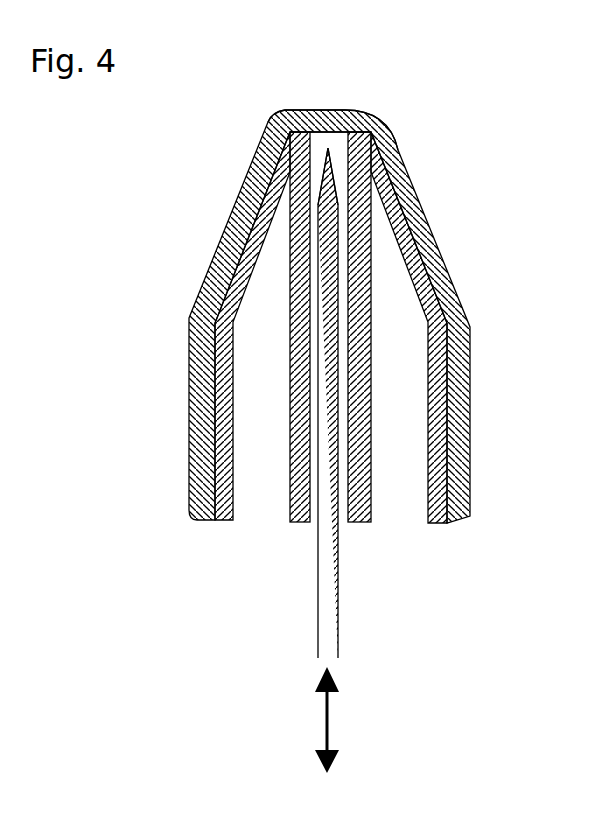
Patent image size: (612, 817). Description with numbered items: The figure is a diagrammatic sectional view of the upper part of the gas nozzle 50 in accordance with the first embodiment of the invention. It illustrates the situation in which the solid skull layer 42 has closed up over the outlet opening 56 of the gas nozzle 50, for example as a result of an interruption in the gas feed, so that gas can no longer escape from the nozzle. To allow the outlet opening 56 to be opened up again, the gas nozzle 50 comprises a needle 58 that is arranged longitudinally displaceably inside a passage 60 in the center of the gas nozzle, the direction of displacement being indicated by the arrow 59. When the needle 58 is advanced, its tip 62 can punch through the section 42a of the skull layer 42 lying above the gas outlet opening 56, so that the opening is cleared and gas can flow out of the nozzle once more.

The solid skull layer 42 is at (470, 330).
The section of the skull layer 42a is at (325, 110).
The gas nozzle 50 is at (447, 413).
The outlet opening 56 is at (340, 142).
The needle 58 is at (338, 580).
The arrow 59 is at (327, 715).
The passage 60 is at (312, 522).
The tip of the needle 62 is at (325, 160).